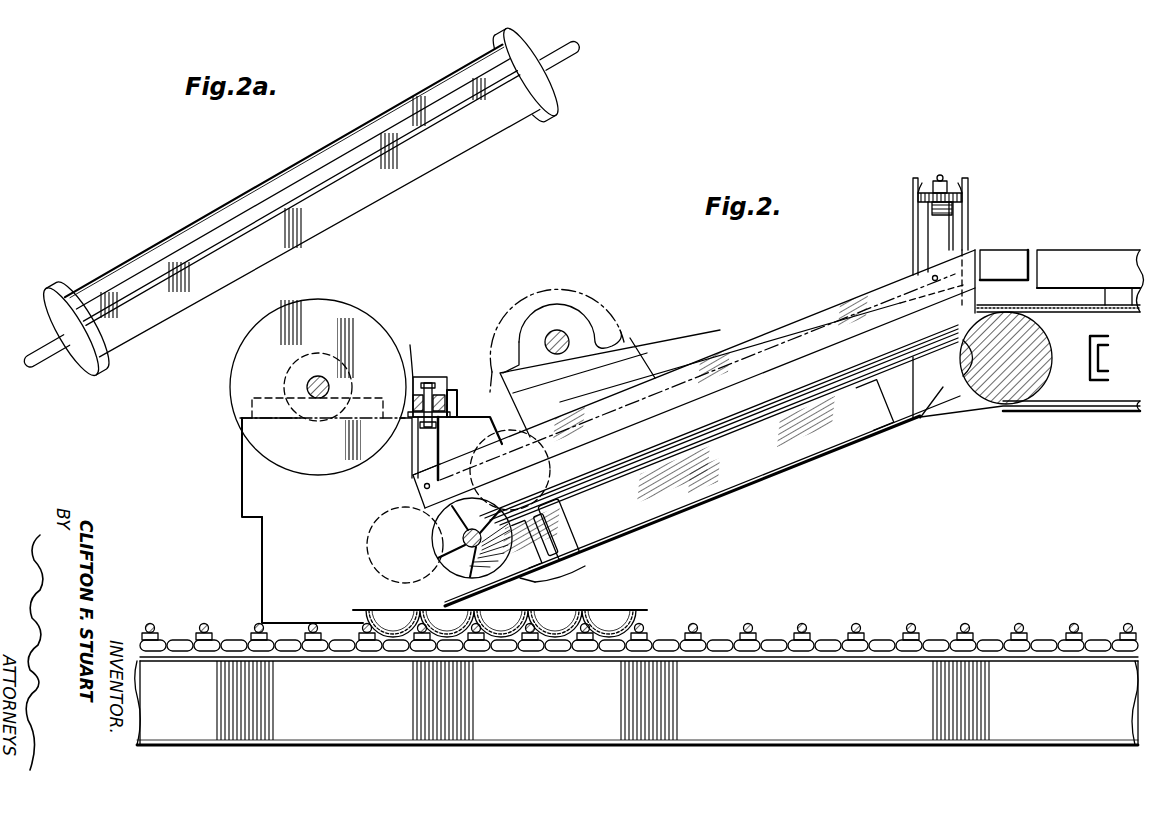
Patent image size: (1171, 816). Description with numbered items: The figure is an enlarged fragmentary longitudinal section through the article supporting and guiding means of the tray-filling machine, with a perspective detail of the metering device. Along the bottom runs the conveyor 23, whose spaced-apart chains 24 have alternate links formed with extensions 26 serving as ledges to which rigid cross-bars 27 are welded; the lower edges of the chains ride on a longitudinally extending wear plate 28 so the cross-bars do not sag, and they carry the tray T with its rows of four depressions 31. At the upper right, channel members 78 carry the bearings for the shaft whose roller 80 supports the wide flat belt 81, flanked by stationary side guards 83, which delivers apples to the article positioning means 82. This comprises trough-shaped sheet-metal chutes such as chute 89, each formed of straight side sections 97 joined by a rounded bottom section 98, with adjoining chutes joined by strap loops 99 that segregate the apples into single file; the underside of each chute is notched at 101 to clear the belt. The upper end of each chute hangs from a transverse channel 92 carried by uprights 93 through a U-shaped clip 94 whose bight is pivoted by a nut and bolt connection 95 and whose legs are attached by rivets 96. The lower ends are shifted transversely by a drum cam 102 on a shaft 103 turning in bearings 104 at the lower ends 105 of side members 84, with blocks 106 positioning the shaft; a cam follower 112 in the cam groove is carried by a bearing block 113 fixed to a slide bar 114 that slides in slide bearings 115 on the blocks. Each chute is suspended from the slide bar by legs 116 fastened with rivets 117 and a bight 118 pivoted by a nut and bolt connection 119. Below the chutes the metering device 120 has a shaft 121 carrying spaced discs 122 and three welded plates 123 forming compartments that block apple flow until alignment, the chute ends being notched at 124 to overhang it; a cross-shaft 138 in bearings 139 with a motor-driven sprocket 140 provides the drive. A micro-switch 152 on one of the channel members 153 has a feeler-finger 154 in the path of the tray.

In FIG. 2, the conveyor 23 is at (775, 632).
In FIG. 2, the chains 24 is at (720, 650).
In FIG. 2, the extensions 26 is at (855, 645).
In FIG. 2, the cross-bars 27 is at (922, 630).
In FIG. 2, the wear plate 28 is at (798, 650).
In FIG. 2, the depressions 31 is at (545, 628).
In FIG. 2, the channel members 78 is at (947, 430).
In FIG. 2, the roller 80 is at (1003, 398).
In FIG. 2, the belt 81 is at (1070, 412).
In FIG. 2, the article positioning means 82 is at (823, 285).
In FIG. 2, the side guards 83 is at (1105, 242).
In FIG. 2, the side members 84 is at (716, 480).
In FIG. 2, the chute 89 is at (736, 346).
In FIG. 2, the channel 92 is at (970, 184).
In FIG. 2, the uprights 93 is at (956, 216).
In FIG. 2, the U-shaped clip 94 is at (930, 228).
In FIG. 2, the nut and bolt connection 95 is at (944, 176).
In FIG. 2, the rivets 96 is at (932, 277).
In FIG. 2, the side sections 97 is at (770, 338).
In FIG. 2, the rounded bottom section 98 is at (795, 400).
In FIG. 2, the loops 99 is at (1012, 258).
In FIG. 2, the notch 101 is at (945, 400).
In FIG. 2, the drum cam 102 is at (338, 310).
In FIG. 2, the shaft 103 is at (307, 386).
In FIG. 2, the bearings 104 is at (378, 326).
In FIG. 2, the lower ends 105 is at (260, 552).
In FIG. 2, the blocks 106 is at (240, 470).
In FIG. 2, the cam follower 112 is at (406, 345).
In FIG. 2, the bearing block 113 is at (447, 377).
In FIG. 2, the slide bar 114 is at (455, 392).
In FIG. 2, the slide bearing 115 is at (456, 402).
In FIG. 2, the legs 116 is at (418, 464).
In FIG. 2, the rivets 117 is at (418, 488).
In FIG. 2, the bight 118 is at (445, 420).
In FIG. 2, the nut and bolt connection 119 is at (428, 382).
In FIG. 2A, the metering device 120 is at (223, 194).
In FIG. 2, the metering device 120 is at (447, 552).
In FIG. 2A, the shaft 121 is at (52, 335).
In FIG. 2, the shaft 121 is at (452, 552).
In FIG. 2A, the discs 122 is at (490, 45).
In FIG. 2A, the plates 123 is at (322, 128).
In FIG. 2, the plates 123 is at (440, 537).
In FIG. 2, the notch 124 is at (500, 505).
In FIG. 2, the cross-shaft 138 is at (570, 342).
In FIG. 2, the bearings 139 is at (640, 345).
In FIG. 2, the sprocket 140 is at (572, 282).
In FIG. 2, the micro-switch 152 is at (580, 535).
In FIG. 2, the channel members 153 is at (512, 538).
In FIG. 2, the feeler-finger 154 is at (570, 572).